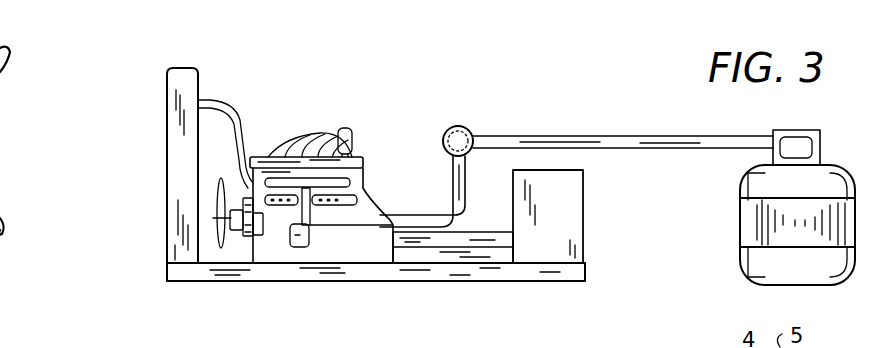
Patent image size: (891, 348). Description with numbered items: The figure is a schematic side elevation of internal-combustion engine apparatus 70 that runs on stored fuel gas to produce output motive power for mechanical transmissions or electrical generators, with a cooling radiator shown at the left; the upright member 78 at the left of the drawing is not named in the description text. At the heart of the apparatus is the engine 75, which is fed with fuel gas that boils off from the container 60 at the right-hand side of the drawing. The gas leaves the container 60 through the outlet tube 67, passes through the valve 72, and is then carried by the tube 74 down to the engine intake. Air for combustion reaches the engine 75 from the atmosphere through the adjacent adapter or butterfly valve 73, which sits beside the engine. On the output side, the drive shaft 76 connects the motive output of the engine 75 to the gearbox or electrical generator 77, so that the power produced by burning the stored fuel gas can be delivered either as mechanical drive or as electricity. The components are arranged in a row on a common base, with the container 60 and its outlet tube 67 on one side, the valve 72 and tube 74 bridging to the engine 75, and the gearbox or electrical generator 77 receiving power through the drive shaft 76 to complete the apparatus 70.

The container 60 is at (752, 218).
The outlet tube 67 is at (642, 135).
The internal-combustion engine apparatus 70 is at (592, 267).
The valve 72 is at (457, 127).
The adapter or butterfly valve 73 is at (308, 242).
The tube 74 is at (458, 190).
The engine 75 is at (367, 185).
The drive shaft 76 is at (497, 240).
The gearbox or electrical generator 77 is at (565, 193).
The upright support post 78 is at (178, 90).